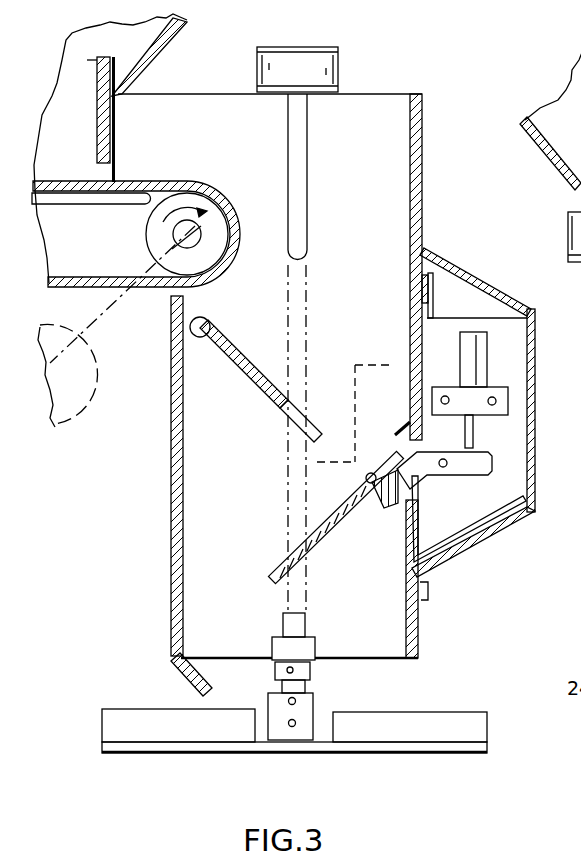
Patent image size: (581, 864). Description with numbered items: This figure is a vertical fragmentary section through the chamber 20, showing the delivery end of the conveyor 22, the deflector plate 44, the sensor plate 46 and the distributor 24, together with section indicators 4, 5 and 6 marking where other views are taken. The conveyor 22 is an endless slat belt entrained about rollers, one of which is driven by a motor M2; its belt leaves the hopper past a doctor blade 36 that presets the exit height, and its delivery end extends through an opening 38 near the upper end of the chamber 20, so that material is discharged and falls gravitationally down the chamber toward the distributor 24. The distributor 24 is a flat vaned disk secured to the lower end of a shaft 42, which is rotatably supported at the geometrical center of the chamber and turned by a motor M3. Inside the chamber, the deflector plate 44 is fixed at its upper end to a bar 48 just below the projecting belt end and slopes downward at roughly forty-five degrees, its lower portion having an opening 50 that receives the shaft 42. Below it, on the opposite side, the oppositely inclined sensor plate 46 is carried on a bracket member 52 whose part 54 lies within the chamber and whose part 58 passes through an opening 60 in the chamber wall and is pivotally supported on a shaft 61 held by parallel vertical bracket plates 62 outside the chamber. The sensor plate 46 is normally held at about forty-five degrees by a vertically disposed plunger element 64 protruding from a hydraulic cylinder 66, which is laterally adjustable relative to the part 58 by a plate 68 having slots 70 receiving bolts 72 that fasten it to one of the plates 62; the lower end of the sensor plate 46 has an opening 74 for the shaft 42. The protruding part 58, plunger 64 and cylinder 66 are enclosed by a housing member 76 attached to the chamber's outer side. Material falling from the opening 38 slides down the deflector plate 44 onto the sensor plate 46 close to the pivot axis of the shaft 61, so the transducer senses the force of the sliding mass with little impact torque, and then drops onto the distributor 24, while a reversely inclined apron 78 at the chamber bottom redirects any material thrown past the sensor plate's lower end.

The chamber 20 is at (426, 167).
The conveyor 22 is at (156, 174).
The distributor 24 is at (408, 706).
The doctor blade 36 is at (97, 138).
The opening 38 is at (112, 128).
The shaft 42 is at (286, 463).
The deflector plate 44 is at (242, 378).
The sensor plate 46 is at (329, 524).
The bar 48 is at (208, 321).
The opening 50 is at (277, 403).
The bracket member 52 is at (402, 455).
The part 54 is at (388, 510).
The part 58 is at (491, 461).
The opening 60 is at (419, 497).
The shaft 61 is at (452, 456).
The bracket plates 62 is at (450, 313).
The plunger element 64 is at (477, 418).
The hydraulic cylinder 66 is at (480, 332).
The plate 68 is at (490, 387).
The slots 70 is at (433, 399).
The bolts 72 is at (442, 397).
The opening 74 is at (312, 538).
The housing member 76 is at (497, 532).
The apron 78 is at (236, 645).
The motor M2 is at (89, 384).
The motor M3 is at (340, 66).
The section line 4 is at (265, 23).
The section line 5 is at (135, 485).
The section line 6 is at (436, 222).